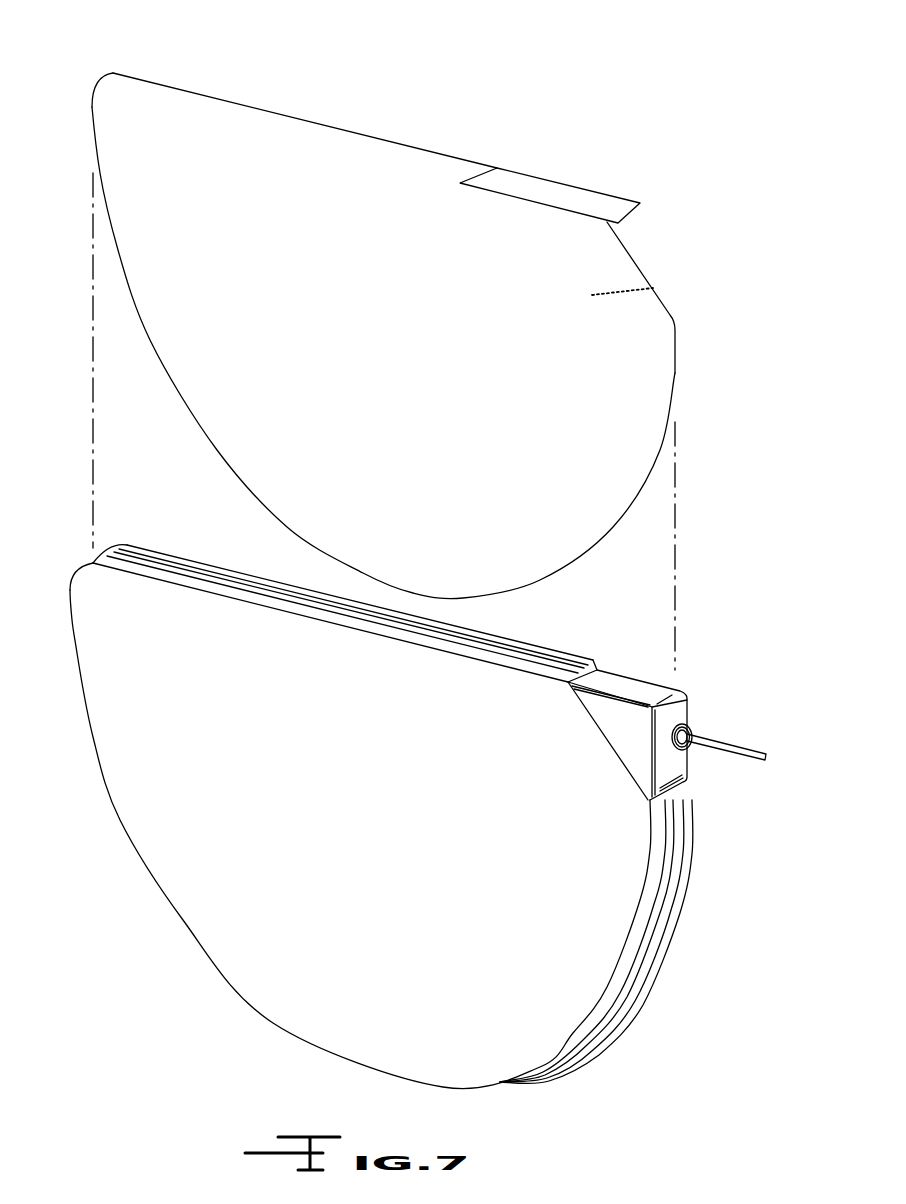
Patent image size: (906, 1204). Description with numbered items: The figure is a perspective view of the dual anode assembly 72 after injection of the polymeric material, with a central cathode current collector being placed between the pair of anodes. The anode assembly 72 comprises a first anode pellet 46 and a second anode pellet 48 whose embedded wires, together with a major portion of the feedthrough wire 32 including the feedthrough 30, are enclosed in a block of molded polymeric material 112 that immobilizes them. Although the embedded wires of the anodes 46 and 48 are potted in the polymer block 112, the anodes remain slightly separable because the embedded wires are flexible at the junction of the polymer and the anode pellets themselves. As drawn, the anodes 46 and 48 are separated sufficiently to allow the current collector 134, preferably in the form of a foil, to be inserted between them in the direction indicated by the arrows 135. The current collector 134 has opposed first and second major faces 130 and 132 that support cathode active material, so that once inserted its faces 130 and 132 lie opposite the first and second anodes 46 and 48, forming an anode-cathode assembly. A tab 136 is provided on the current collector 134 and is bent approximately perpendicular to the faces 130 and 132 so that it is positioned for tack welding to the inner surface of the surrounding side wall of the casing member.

The first major face 130 is at (418, 320).
The second major face 132 is at (653, 288).
The current collector 134 is at (550, 145).
The tab 136 is at (517, 180).
The anode pellet 46 is at (354, 572).
The arrows 135 is at (274, 528).
The feedthrough 30 is at (657, 735).
The feedthrough wire 32 is at (763, 758).
The polymeric material 112 is at (627, 733).
The anode assembly 72 is at (443, 783).
The anode pellet 48 is at (273, 1022).